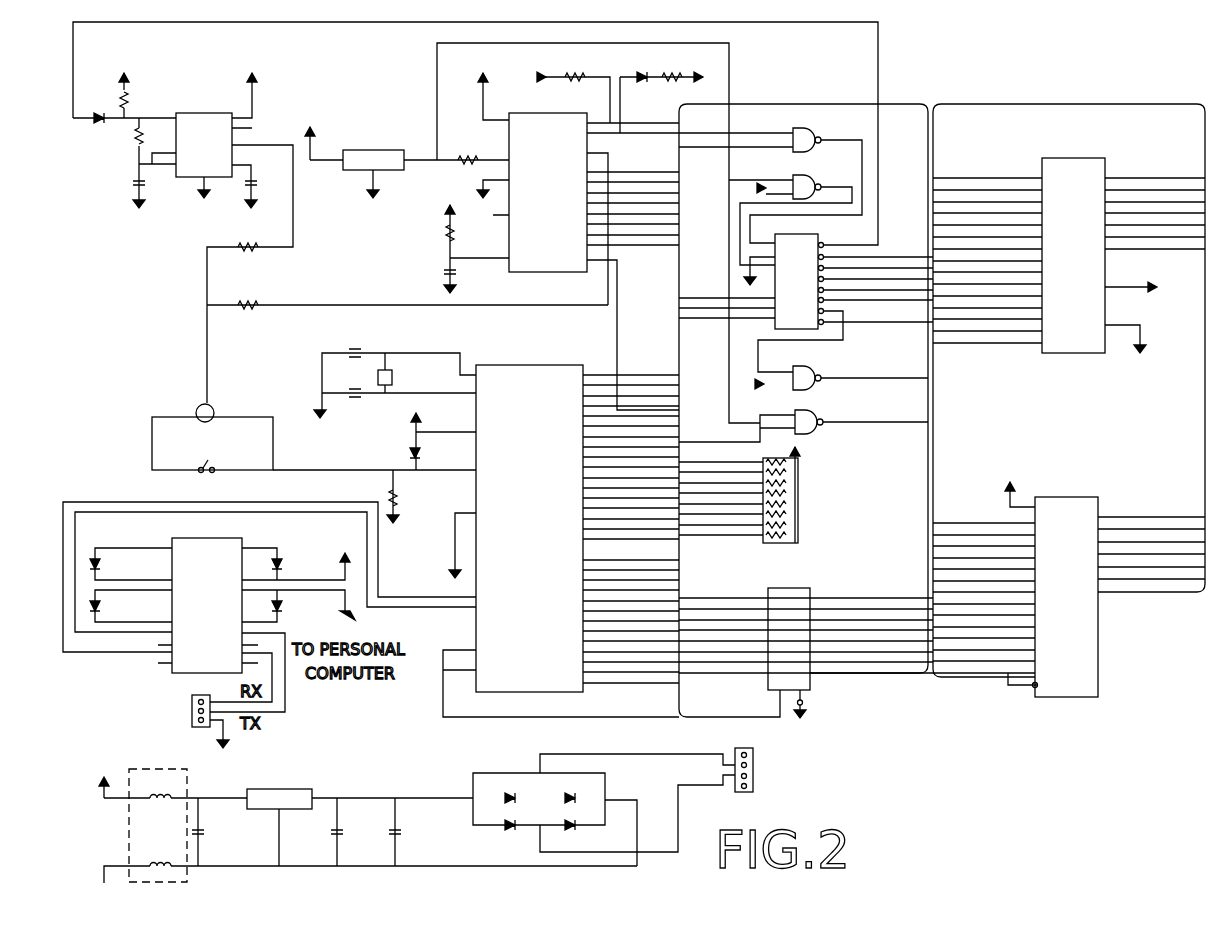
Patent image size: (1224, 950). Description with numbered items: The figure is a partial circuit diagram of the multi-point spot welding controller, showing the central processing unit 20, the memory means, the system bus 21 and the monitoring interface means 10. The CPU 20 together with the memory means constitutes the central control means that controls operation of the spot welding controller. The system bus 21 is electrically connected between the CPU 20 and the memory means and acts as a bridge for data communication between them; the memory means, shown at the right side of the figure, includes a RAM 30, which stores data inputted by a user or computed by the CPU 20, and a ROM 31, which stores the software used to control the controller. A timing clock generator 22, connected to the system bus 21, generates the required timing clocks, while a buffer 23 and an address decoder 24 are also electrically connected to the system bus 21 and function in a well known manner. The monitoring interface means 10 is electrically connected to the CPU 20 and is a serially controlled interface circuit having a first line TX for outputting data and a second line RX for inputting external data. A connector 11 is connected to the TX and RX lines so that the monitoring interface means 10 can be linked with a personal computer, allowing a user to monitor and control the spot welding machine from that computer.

The monitoring interface means 10 is at (233, 540).
The connector 11 is at (190, 712).
The central processing unit 20 is at (548, 371).
The system bus 21 is at (680, 383).
The timing clock generator 22 is at (533, 272).
The buffer 23 is at (808, 588).
The address decoder 24 is at (803, 326).
The RAM 30 is at (1092, 353).
The ROM 31 is at (1083, 497).